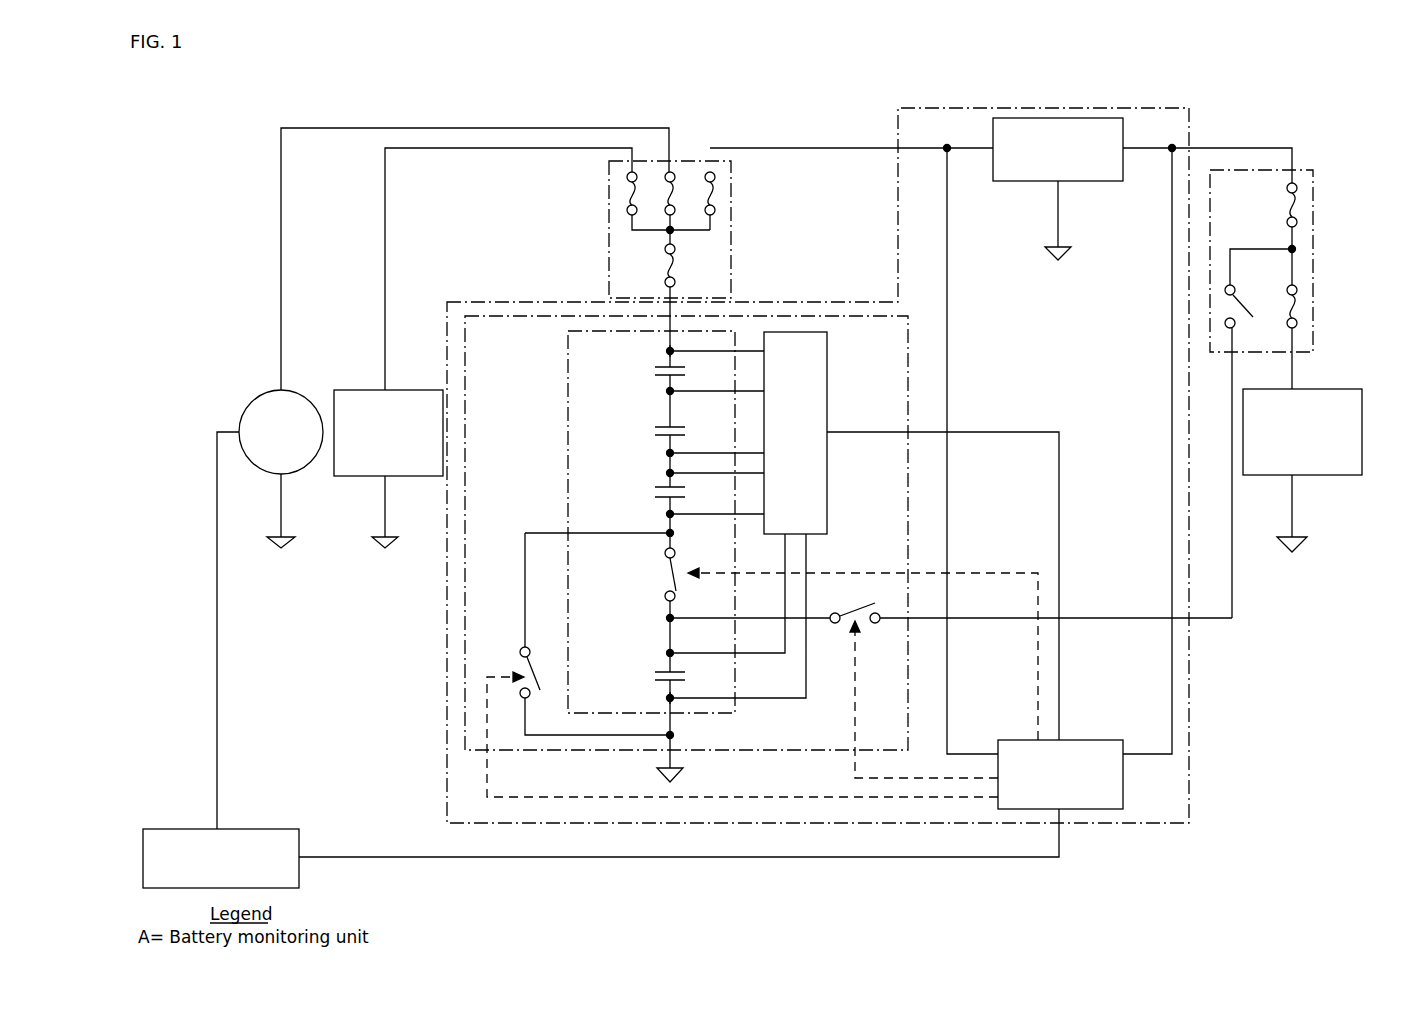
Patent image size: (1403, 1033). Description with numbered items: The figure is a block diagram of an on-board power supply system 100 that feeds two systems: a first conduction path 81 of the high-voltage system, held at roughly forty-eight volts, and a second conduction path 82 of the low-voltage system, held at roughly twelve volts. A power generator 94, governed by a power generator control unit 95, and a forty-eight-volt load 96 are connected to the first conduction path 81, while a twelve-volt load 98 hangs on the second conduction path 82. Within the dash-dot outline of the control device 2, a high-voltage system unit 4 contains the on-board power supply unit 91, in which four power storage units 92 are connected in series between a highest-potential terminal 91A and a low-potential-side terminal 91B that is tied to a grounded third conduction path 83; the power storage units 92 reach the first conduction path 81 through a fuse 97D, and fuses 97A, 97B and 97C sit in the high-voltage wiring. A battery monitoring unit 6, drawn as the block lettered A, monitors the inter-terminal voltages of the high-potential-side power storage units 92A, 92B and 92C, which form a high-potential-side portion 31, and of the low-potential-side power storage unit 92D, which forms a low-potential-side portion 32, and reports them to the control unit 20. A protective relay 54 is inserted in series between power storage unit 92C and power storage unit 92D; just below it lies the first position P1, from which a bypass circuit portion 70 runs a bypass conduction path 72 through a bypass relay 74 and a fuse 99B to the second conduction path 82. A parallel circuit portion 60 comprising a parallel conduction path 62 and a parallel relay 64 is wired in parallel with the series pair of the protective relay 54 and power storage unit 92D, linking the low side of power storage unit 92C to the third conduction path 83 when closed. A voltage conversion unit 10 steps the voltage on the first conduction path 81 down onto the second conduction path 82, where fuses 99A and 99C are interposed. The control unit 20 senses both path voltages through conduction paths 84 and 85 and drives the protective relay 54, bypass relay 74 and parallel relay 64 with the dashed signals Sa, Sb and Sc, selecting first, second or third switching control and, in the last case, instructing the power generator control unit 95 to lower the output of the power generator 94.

The on-board power supply system 100 is at (1255, 104).
The control device for the on-board power supply unit 2 is at (1189, 722).
The high-voltage system unit 4 is at (820, 752).
The battery monitoring unit 6 is at (828, 372).
The voltage conversion unit 10 is at (1062, 118).
The control unit 20 is at (1123, 792).
The high-potential-side portion 31 is at (694, 430).
The low-potential-side portion 32 is at (648, 654).
The protective relay 54 is at (673, 572).
The parallel circuit portion 60 is at (508, 634).
The parallel conduction path 62 is at (525, 620).
The parallel relay 64 is at (517, 667).
The bypass circuit portion 70 is at (1025, 554).
The bypass conduction path 72 is at (818, 616).
The bypass relay 74 is at (869, 570).
The first conduction path 81 is at (827, 148).
The second conduction path 82 is at (1268, 148).
The third conduction path 83 is at (681, 766).
The conduction path 84 is at (950, 362).
The conduction path 85 is at (1170, 366).
The on-board power supply unit 91 is at (568, 388).
The terminal 91A is at (666, 362).
The low-potential-side terminal 91B is at (681, 681).
The power storage unit 92 is at (631, 538).
The high-potential-side power storage unit 92A is at (658, 375).
The high-potential-side power storage unit 92B is at (658, 435).
The high-potential-side power storage unit 92C is at (658, 497).
The low-potential-side power storage unit 92D is at (657, 680).
The power generator 94 is at (263, 394).
The power generator control unit 95 is at (207, 829).
The load of the high-voltage system 96 is at (361, 390).
The fuse 97A is at (626, 200).
The fuse 97B is at (665, 202).
The fuse 97C is at (718, 190).
The fuse 97D is at (680, 262).
The load of the low-voltage system 98 is at (1318, 389).
The fuse 99A is at (1299, 200).
The fuse 99B is at (1252, 317).
The fuse 99C is at (1293, 306).
The first position P1 is at (668, 615).
The signal Sa is at (863, 645).
The signal Sb is at (924, 700).
The signal Sc is at (742, 737).